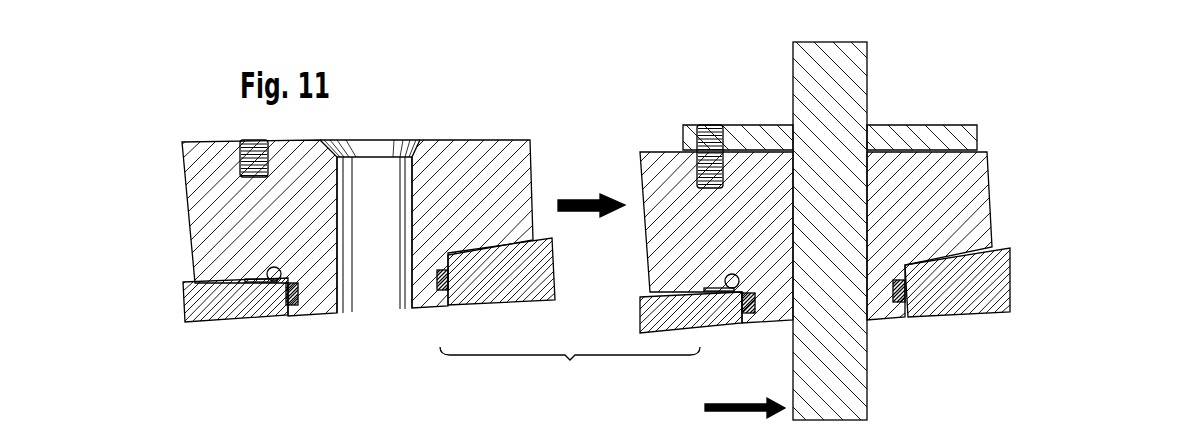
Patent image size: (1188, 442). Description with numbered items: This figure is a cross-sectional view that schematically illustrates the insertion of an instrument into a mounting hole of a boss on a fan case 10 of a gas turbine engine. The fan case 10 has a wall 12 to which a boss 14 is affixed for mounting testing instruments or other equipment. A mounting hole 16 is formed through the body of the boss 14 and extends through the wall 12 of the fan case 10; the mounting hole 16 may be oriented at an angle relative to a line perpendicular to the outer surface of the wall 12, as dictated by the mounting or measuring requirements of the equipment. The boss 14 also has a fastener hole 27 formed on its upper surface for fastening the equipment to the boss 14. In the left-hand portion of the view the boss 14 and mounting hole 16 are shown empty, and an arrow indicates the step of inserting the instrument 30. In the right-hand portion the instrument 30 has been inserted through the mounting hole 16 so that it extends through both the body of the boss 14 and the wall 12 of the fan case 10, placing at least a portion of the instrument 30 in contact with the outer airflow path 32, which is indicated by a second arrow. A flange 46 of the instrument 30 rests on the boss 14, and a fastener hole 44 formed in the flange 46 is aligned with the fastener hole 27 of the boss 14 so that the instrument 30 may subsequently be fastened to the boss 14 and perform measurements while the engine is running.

The fan case 10 is at (193, 112).
The wall 12 is at (540, 277).
The boss 14 is at (520, 158).
The mounting hole 16 is at (375, 176).
The fastener hole 27 is at (258, 150).
The instrument 30 is at (835, 92).
The outer airflow path 32 is at (742, 404).
The fastener hole 44 is at (712, 130).
The flange 46 is at (744, 133).